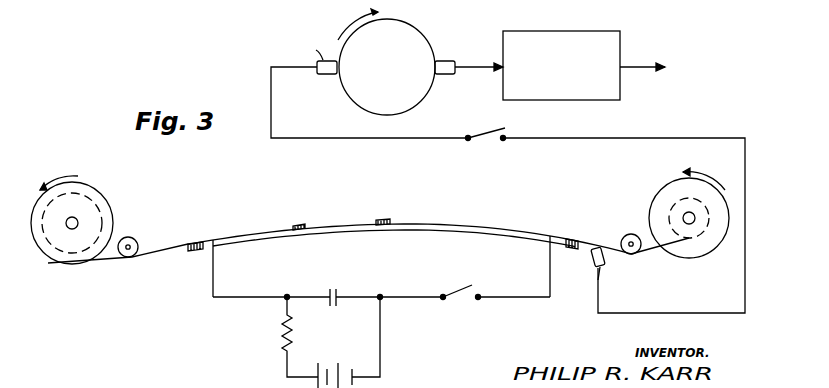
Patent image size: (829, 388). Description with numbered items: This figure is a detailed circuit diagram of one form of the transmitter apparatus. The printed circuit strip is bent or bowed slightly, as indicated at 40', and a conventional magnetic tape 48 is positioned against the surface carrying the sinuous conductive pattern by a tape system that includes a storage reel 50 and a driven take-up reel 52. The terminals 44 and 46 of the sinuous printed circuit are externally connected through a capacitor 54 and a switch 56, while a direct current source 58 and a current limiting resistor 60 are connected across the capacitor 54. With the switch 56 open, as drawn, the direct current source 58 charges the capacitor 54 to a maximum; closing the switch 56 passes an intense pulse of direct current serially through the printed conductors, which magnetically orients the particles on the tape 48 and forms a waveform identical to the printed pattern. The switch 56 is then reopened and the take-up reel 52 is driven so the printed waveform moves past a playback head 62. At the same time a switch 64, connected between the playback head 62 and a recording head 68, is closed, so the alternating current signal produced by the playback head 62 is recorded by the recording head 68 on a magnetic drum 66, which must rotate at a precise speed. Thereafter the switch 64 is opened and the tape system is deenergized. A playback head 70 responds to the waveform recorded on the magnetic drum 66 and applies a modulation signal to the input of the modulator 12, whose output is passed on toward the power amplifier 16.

The modulator 12 is at (585, 31).
The power amplifier 16 is at (669, 55).
The bowed printed circuit strip 40' is at (393, 236).
The terminal 44 is at (214, 245).
The terminal 46 is at (549, 237).
The magnetic tape 48 is at (165, 249).
The storage reel 50 is at (98, 191).
The take-up reel 52 is at (661, 190).
The capacitor 54 is at (336, 291).
The switch 56 is at (463, 288).
The direct current source 58 is at (350, 366).
The current limiting resistor 60 is at (284, 324).
The playback head 62 is at (594, 264).
The switch 64 is at (489, 128).
The magnetic drum 66 is at (349, 96).
The recording head 68 is at (318, 74).
The playback head 70 is at (441, 61).